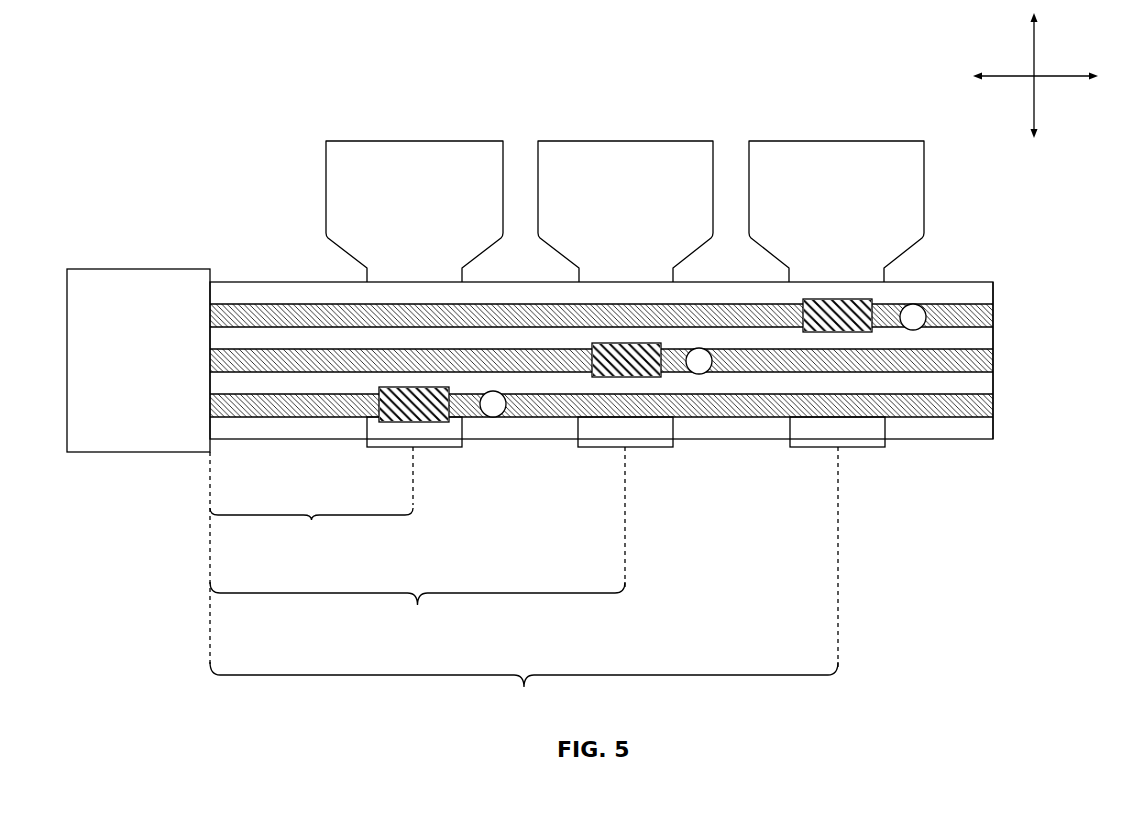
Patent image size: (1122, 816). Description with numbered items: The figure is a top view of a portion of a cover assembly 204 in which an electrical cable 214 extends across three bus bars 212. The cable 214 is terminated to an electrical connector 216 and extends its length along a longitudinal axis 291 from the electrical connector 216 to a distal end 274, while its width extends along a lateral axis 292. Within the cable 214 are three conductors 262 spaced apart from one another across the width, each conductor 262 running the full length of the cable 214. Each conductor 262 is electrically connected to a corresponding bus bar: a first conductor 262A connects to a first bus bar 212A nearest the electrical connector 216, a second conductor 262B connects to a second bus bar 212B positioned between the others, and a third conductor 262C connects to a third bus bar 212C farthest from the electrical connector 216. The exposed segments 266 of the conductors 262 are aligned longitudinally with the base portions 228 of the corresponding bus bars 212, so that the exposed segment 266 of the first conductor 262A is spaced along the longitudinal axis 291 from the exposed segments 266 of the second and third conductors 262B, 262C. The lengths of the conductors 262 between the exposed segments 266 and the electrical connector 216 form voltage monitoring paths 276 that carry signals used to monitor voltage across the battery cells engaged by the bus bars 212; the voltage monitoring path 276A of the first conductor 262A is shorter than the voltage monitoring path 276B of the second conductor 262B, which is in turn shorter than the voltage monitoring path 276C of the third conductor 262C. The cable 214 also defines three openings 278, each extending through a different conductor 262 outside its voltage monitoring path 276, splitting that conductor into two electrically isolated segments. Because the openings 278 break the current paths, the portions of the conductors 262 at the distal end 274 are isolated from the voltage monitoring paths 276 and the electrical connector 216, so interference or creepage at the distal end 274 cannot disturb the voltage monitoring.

The cover assembly 204 is at (263, 90).
The bus bars 212 is at (609, 189).
The first bus bar 212A is at (387, 152).
The second bus bar 212B is at (602, 152).
The third bus bar 212C is at (812, 152).
The electrical cable 214 is at (595, 345).
The electrical connector 216 is at (102, 285).
The base portions 228 is at (799, 270).
The conductors 262 is at (595, 366).
The first conductor 262A is at (287, 405).
The second conductor 262B is at (335, 355).
The third conductor 262C is at (240, 312).
The exposed segments 266 is at (393, 408).
The distal end 274 is at (997, 313).
The voltage monitoring paths 276 is at (524, 561).
The voltage monitoring path of the first conductor 276A is at (311, 531).
The voltage monitoring path of the second conductor 276B is at (417, 608).
The voltage monitoring path of the third conductor 276C is at (524, 688).
The openings 278 is at (492, 422).
The longitudinal axis 291 is at (1010, 73).
The lateral axis 292 is at (1035, 68).